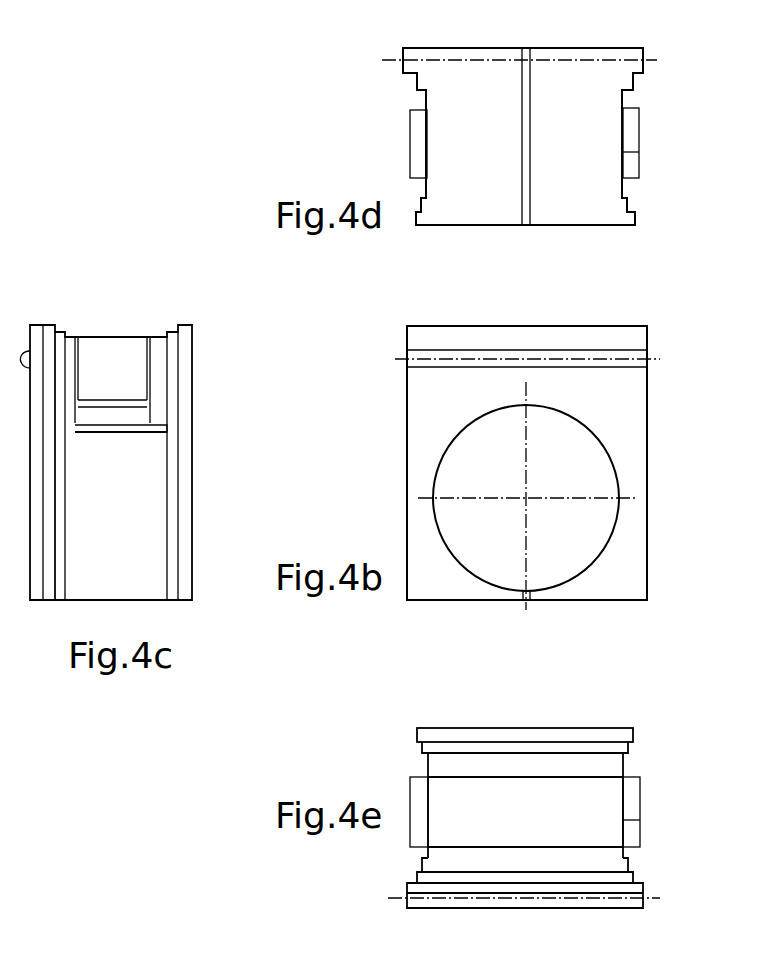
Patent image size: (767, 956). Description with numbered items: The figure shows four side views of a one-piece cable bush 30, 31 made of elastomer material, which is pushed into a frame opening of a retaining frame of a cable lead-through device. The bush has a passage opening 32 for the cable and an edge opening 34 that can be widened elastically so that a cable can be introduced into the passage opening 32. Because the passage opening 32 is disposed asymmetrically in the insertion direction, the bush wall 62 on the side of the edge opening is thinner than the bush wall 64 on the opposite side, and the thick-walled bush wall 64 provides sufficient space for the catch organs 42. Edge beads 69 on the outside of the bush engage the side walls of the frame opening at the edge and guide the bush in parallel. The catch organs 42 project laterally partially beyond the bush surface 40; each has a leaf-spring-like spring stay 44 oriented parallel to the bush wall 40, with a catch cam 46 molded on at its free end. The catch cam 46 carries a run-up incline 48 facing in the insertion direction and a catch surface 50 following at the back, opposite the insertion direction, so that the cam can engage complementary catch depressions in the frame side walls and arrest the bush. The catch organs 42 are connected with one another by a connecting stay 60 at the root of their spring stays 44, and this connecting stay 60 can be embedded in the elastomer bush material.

In FIG. 4D, the bush 30 is at (563, 135).
In FIG. 4C, the bush 30 is at (165, 462).
In FIG. 4B, the bush 30 is at (571, 463).
In FIG. 4E, the bush 30 is at (543, 709).
In FIG. 4D, the bush 31 is at (563, 135).
In FIG. 4C, the bush 31 is at (143, 480).
In FIG. 4B, the bush 31 is at (606, 420).
In FIG. 4E, the bush 31 is at (565, 743).
In FIG. 4B, the passage opening 32 is at (563, 481).
In FIG. 4D, the edge opening 34 is at (555, 136).
In FIG. 4B, the edge opening 34 is at (523, 603).
In FIG. 4D, the bush surface 40 is at (623, 187).
In FIG. 4D, the catch organ 42 is at (628, 153).
In FIG. 4C, the catch organ 42 is at (88, 362).
In FIG. 4E, the catch organ 42 is at (628, 820).
In FIG. 4C, the spring stay 44 is at (113, 355).
In FIG. 4D, the catch cam 46 is at (633, 120).
In FIG. 4C, the catch cam 46 is at (105, 413).
In FIG. 4E, the catch cam 46 is at (627, 790).
In FIG. 4D, the run-up incline 48 is at (418, 131).
In FIG. 4C, the run-up incline 48 is at (127, 413).
In FIG. 4C, the catch surface 50 is at (118, 400).
In FIG. 4E, the catch surface 50 is at (410, 778).
In FIG. 4E, the connecting stay 60 is at (510, 807).
In FIG. 4B, the bush wall 62 is at (558, 593).
In FIG. 4B, the bush wall 64 is at (485, 398).
In FIG. 4E, the bush wall 64 is at (420, 880).
In FIG. 4D, the edge bead 69 is at (417, 80).
In FIG. 4C, the edge bead 69 is at (60, 326).